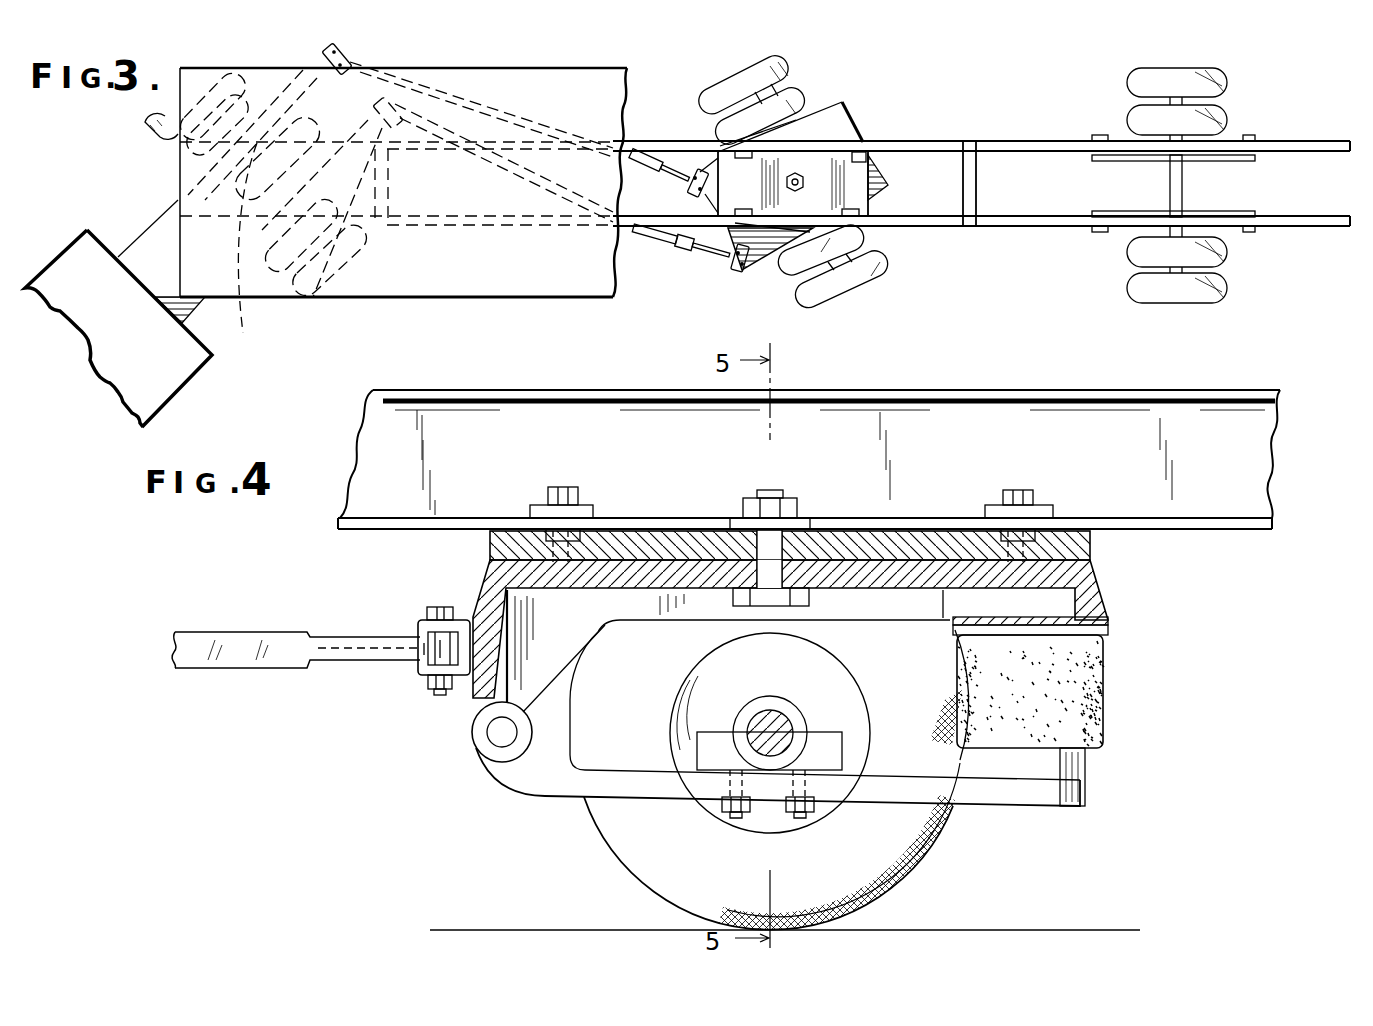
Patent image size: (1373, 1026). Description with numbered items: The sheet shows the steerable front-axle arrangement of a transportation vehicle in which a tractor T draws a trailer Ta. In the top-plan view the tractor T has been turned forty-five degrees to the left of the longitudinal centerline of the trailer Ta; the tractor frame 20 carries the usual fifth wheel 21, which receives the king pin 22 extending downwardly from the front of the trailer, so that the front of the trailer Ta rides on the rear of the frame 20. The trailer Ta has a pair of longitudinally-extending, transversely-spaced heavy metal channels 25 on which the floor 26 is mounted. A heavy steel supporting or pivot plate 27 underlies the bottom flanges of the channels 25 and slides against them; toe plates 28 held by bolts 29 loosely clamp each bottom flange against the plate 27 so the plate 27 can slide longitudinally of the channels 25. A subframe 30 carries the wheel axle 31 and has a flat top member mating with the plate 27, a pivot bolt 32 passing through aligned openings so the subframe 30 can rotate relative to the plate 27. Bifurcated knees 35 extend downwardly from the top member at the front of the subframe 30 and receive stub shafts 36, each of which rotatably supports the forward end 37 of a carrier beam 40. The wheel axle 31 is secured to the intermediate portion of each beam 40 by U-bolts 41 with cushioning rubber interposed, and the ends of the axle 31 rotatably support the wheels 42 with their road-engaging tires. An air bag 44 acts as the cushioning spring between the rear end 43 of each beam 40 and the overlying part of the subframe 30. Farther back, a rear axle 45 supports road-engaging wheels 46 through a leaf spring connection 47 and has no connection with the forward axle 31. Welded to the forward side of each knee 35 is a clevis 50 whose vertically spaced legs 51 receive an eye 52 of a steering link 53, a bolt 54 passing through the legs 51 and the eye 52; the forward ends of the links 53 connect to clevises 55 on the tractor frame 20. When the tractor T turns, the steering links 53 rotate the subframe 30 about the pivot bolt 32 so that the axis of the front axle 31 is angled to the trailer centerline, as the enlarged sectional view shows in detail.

In FIG. 3, the tractor T is at (60, 245).
In FIG. 3, the trailer Ta is at (574, 70).
In FIG. 3, the frame 20 is at (145, 240).
In FIG. 3, the fifth wheel 21 is at (254, 247).
In FIG. 3, the king pin 22 is at (302, 150).
In FIG. 3, the channels 25 is at (1012, 140).
In FIG. 4, the channels 25 is at (1003, 390).
In FIG. 3, the floor 26 is at (508, 68).
In FIG. 3, the supporting or pivot plate 27 is at (855, 208).
In FIG. 4, the supporting or pivot plate 27 is at (1095, 546).
In FIG. 3, the toe plates 28 is at (866, 152).
In FIG. 4, the toe plates 28 is at (538, 505).
In FIG. 4, the bolts 29 is at (565, 487).
In FIG. 3, the subframe 30 is at (888, 184).
In FIG. 4, the subframe 30 is at (1110, 600).
In FIG. 3, the wheel axle 31 is at (845, 112).
In FIG. 4, the wheel axle 31 is at (920, 562).
In FIG. 3, the pivot bolt 32 is at (800, 181).
In FIG. 4, the pivot bolt 32 is at (780, 494).
In FIG. 4, the bifurcated knees 35 is at (487, 586).
In FIG. 4, the stub shaft 36 is at (502, 732).
In FIG. 4, the forward end of carrier beam 37 is at (527, 780).
In FIG. 4, the carrier beam 40 is at (604, 800).
In FIG. 4, the U-bolts 41 is at (772, 700).
In FIG. 3, the wheels 42 is at (855, 282).
In FIG. 4, the wheels 42 is at (925, 845).
In FIG. 4, the rear end of beam 43 is at (1048, 790).
In FIG. 4, the air bag 44 is at (1100, 690).
In FIG. 3, the rear axle 45 is at (1168, 183).
In FIG. 3, the road-engaging wheels 46 is at (1130, 290).
In FIG. 3, the leaf spring connection 47 is at (1098, 135).
In FIG. 3, the clevis 50 is at (692, 183).
In FIG. 4, the clevis 50 is at (418, 678).
In FIG. 4, the legs 51 is at (420, 628).
In FIG. 4, the eye 52 is at (428, 650).
In FIG. 3, the steering link 53 is at (640, 150).
In FIG. 4, the steering link 53 is at (225, 633).
In FIG. 4, the bolt 54 is at (440, 606).
In FIG. 3, the clevises 55 is at (348, 56).